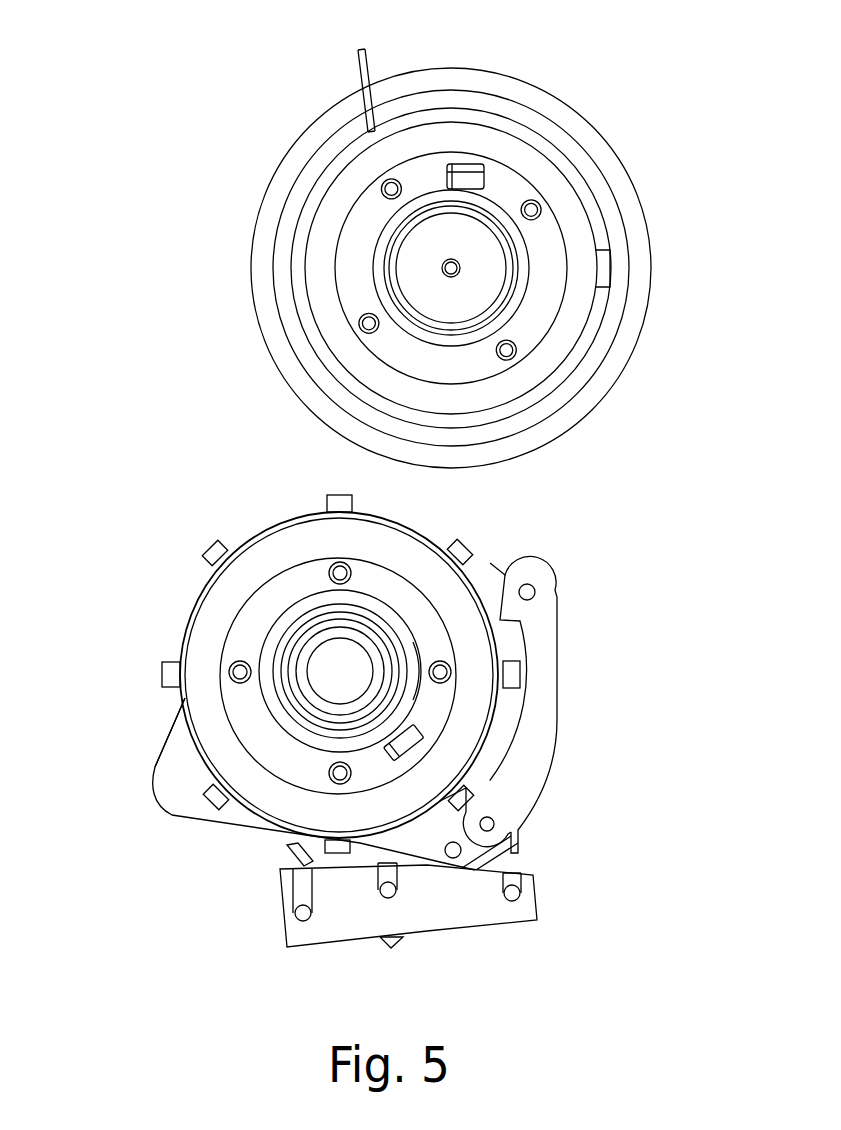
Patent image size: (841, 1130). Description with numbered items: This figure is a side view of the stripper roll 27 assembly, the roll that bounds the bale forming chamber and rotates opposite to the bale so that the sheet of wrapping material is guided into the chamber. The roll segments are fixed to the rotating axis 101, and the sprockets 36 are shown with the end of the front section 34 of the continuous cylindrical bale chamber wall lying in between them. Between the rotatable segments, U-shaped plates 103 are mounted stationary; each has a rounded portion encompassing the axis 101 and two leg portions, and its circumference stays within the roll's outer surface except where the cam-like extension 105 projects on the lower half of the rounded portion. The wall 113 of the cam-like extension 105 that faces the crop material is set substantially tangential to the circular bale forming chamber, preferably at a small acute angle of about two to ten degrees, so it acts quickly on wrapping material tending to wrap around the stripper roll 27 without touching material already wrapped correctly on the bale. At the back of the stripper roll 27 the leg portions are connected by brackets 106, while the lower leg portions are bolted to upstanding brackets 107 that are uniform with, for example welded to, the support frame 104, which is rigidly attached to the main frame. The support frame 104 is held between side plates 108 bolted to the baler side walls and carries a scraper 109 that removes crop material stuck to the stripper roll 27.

The stripper roll 27 is at (235, 500).
The front section 34 is at (367, 62).
The sprockets 36 is at (583, 268).
The rotating axis 101 is at (322, 673).
The U-shaped plates 103 is at (335, 686).
The support frame 104 is at (520, 853).
The cam-like extension 105 is at (187, 793).
The brackets 106 is at (546, 720).
The upstanding brackets 107 is at (427, 867).
The side plates 108 is at (470, 913).
The scraper 109 is at (297, 859).
The wall 113 is at (153, 753).